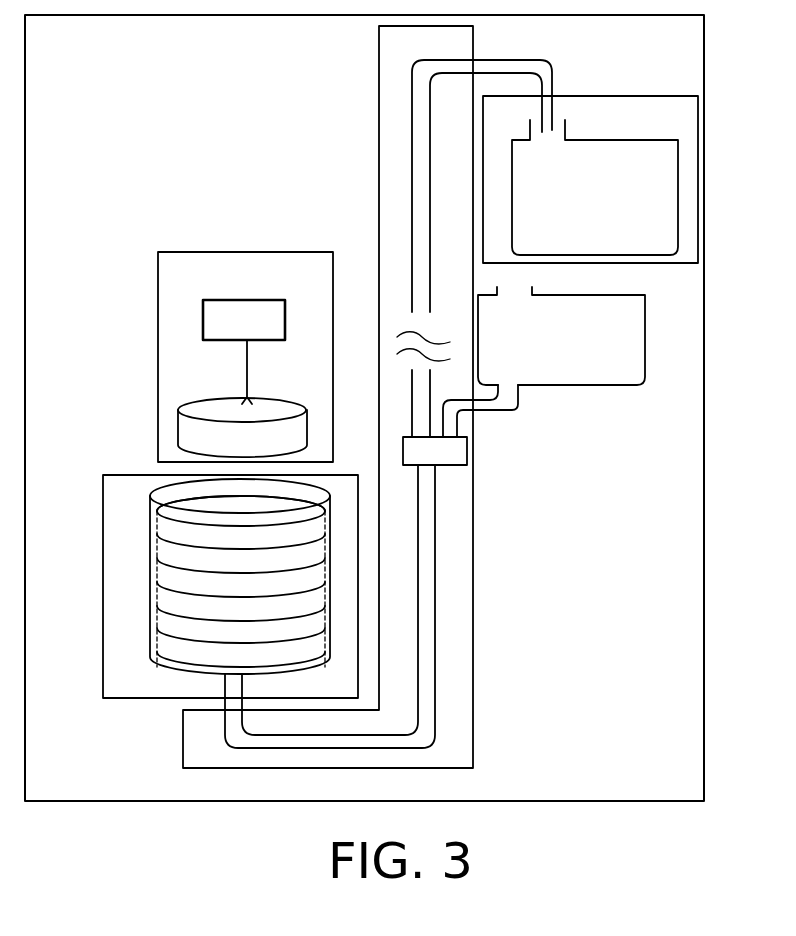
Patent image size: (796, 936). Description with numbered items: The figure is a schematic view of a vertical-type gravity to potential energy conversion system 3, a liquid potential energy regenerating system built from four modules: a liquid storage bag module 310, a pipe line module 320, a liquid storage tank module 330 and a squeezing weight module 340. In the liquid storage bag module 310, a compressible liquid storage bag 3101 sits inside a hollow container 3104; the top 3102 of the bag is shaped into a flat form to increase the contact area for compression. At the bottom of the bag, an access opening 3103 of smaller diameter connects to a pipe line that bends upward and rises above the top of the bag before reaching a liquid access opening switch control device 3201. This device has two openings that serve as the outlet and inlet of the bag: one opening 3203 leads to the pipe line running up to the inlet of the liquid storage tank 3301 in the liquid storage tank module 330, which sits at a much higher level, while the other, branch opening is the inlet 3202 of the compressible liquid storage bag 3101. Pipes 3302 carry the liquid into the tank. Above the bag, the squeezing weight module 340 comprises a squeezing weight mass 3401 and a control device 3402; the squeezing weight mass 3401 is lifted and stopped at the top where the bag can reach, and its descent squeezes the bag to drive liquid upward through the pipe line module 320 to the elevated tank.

The liquid potential energy regenerating system 3 is at (364, 408).
The liquid storage bag module 310 is at (230, 586).
The compressible liquid storage bag 3101 is at (167, 610).
The top of the liquid storage bag 3102 is at (219, 498).
The access opening 3103 is at (230, 687).
The hollow container 3104 is at (140, 563).
The pipe line module 320 is at (328, 397).
The liquid access opening switch control device 3201 is at (455, 448).
The inlet of the compressible liquid storage bag 3202 is at (455, 418).
The opening 3203 is at (420, 407).
The liquid storage tank module 330 is at (590, 179).
The liquid storage tank 3301 is at (613, 139).
The supply pipe 3302 is at (543, 88).
The squeezing weight module 340 is at (245, 357).
The squeezing weight mass 3401 is at (208, 413).
The control device 3402 is at (300, 281).